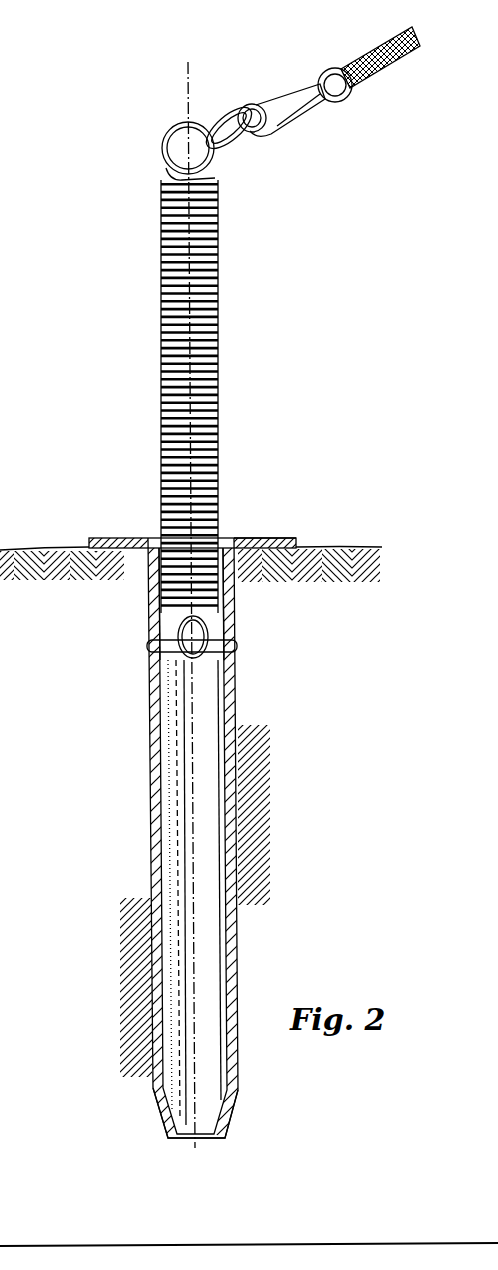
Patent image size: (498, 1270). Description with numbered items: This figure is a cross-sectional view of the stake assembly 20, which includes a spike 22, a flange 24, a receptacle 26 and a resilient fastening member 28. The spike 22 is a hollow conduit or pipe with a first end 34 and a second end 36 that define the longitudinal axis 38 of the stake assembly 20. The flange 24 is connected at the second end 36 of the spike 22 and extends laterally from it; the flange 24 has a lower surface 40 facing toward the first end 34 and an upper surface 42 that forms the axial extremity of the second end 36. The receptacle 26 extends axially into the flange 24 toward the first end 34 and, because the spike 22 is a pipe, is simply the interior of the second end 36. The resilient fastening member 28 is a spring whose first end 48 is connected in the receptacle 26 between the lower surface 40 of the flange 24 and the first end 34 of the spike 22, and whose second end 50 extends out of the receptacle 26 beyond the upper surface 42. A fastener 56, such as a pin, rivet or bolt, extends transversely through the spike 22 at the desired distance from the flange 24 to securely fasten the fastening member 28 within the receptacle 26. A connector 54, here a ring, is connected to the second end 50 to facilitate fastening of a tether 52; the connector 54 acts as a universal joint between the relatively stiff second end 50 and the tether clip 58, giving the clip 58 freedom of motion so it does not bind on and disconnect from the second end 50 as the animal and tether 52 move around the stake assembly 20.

The stake assembly 20 is at (112, 323).
The spike 22 is at (152, 868).
The flange 24 is at (243, 535).
The receptacle 26 is at (160, 602).
The resilient fastening member 28 is at (218, 267).
The first end 34 is at (232, 1120).
The second end 36 is at (147, 562).
The longitudinal axis 38 is at (187, 82).
The lower surface 40 is at (290, 552).
The upper surface 42 is at (277, 537).
The first end 48 is at (203, 628).
The second end 50 is at (167, 132).
The tether 52 is at (400, 37).
The connector 54 is at (218, 115).
The fastener 56 is at (235, 648).
The tether clip 58 is at (283, 107).